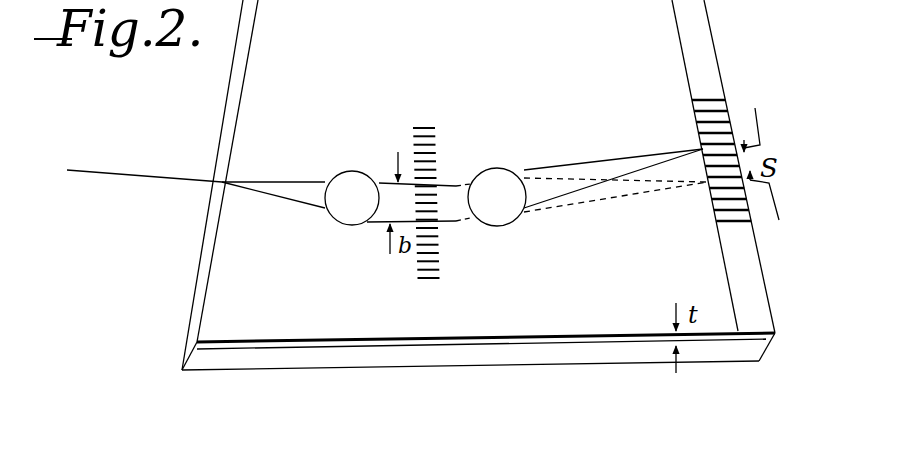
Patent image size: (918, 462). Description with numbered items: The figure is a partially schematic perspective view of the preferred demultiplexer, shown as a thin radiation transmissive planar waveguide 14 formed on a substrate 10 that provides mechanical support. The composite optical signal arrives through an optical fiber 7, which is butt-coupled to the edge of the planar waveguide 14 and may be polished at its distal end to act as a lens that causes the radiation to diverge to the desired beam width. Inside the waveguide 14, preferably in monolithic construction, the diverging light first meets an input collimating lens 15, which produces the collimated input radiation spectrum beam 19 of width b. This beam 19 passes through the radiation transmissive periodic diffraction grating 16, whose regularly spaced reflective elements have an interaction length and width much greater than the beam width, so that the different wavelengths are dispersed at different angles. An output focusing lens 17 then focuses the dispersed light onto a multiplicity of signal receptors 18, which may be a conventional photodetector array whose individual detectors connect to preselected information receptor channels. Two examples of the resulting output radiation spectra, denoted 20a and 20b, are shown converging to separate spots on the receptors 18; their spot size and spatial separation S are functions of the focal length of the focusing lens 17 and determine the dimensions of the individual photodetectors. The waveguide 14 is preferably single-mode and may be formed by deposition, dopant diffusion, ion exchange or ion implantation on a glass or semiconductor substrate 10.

The optical fiber 7 is at (157, 178).
The substrate 10 is at (336, 357).
The radiation transmissive planar waveguide 14 is at (383, 345).
The input collimating lens 15 is at (352, 196).
The radiation transmissive periodic diffraction grating 16 is at (421, 127).
The output focusing lens 17 is at (496, 196).
The signal receptors 18 is at (737, 100).
The collimated input radiation spectrum beam 19 is at (400, 210).
The output radiation spectrum 20a is at (621, 182).
The output radiation spectrum 20b is at (617, 193).